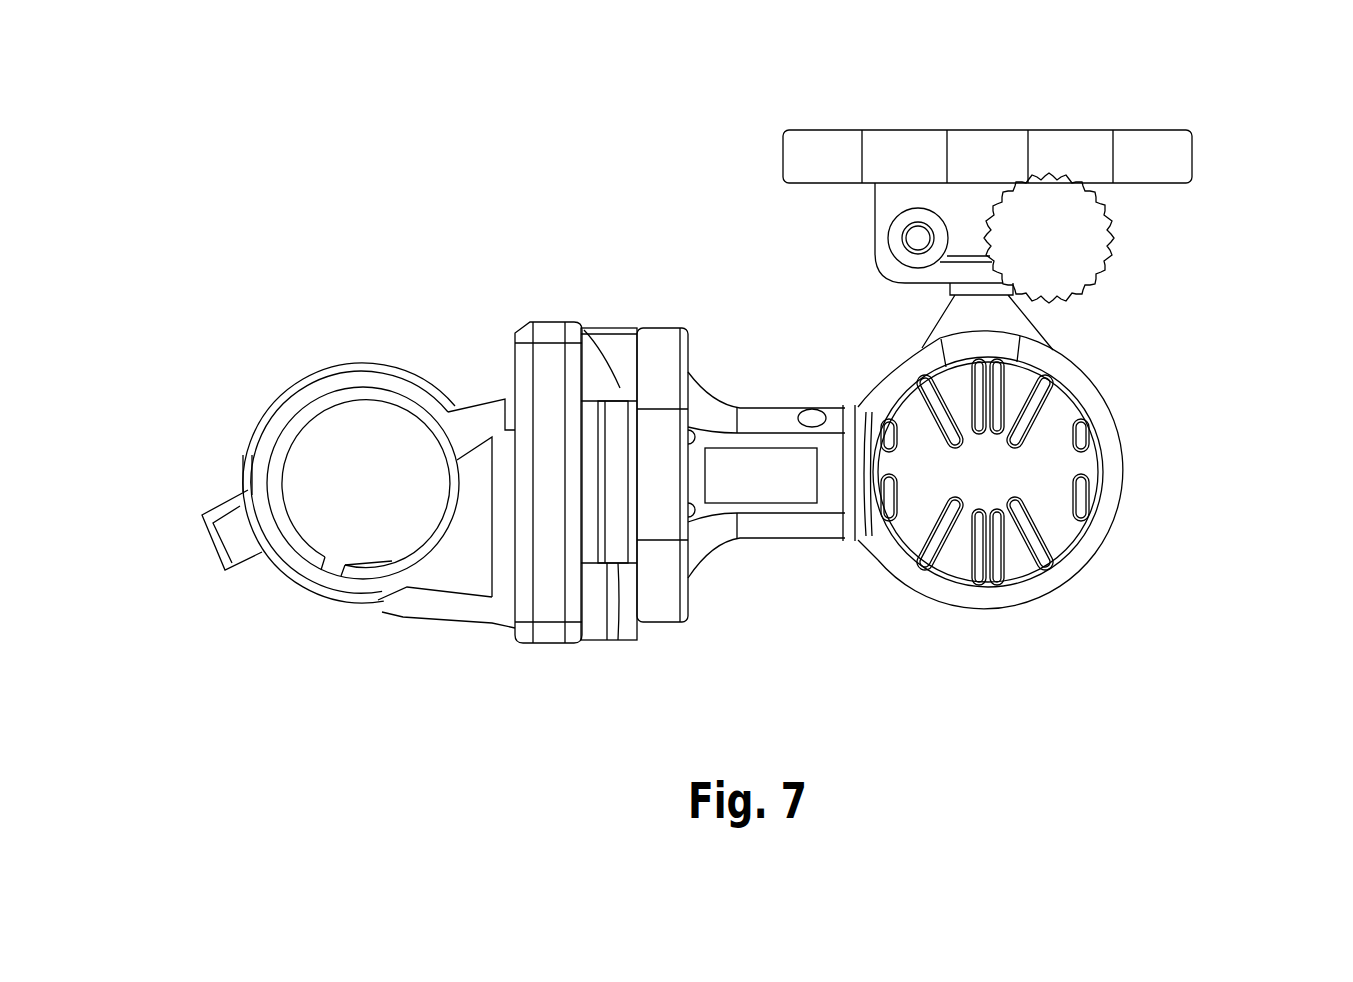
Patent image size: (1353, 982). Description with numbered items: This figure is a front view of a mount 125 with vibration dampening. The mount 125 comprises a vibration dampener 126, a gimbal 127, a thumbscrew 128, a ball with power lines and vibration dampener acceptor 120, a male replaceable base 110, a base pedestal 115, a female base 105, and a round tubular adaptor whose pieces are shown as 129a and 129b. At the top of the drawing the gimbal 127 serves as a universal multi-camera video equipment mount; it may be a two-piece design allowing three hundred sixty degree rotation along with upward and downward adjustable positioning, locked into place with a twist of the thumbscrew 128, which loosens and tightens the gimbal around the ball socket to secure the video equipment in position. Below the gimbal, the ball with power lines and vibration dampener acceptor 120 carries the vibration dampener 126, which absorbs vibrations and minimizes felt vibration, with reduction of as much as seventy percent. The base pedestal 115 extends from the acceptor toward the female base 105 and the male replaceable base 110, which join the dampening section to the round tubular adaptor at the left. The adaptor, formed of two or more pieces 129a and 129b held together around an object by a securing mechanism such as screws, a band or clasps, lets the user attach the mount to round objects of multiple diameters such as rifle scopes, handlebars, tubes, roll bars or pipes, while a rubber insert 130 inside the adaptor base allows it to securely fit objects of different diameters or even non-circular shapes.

The female base 105 is at (590, 357).
The male replaceable base 110 is at (547, 318).
The base pedestal 115 is at (653, 348).
The ball with power lines and vibration dampener acceptor 120 is at (1072, 565).
The mount 125 is at (1135, 350).
The vibration dampener 126 is at (1058, 452).
The gimbal 127 is at (1060, 140).
The thumbscrew 128 is at (1063, 246).
The clamp tab 129a is at (256, 467).
The clamp slot 129b is at (323, 583).
The rubber insert 130 is at (298, 415).